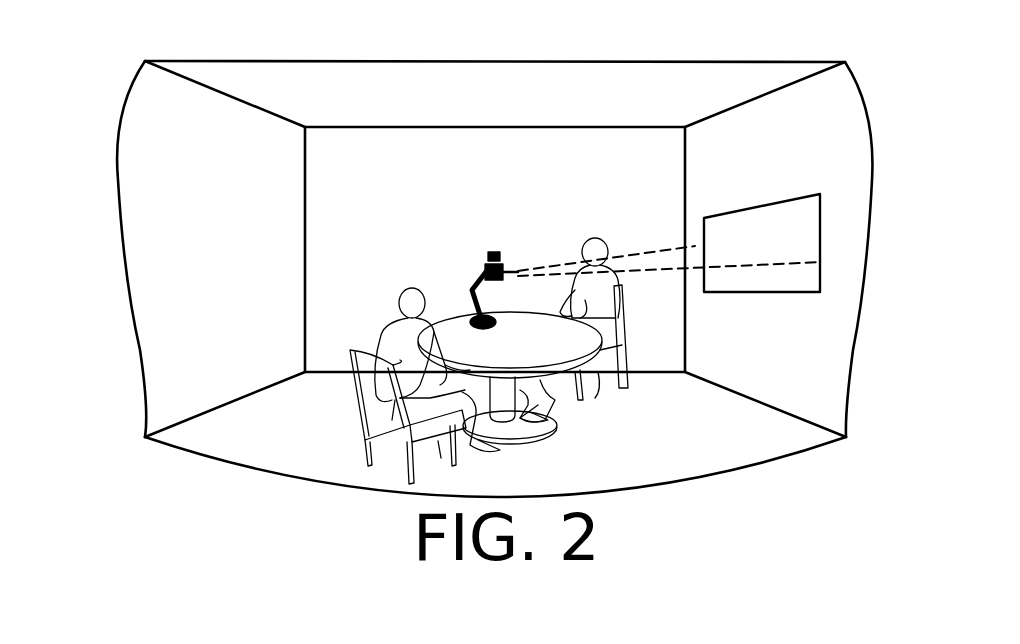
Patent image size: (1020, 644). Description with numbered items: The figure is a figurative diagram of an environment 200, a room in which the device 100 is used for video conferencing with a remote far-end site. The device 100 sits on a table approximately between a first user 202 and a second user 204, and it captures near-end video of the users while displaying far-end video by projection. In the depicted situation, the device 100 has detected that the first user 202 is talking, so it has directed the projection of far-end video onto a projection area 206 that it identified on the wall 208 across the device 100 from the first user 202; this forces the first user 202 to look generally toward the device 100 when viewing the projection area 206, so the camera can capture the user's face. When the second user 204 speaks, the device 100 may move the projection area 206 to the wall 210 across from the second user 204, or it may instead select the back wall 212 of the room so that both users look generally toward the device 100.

The environment 200 is at (168, 38).
The device 100 is at (480, 276).
The first user 202 is at (405, 295).
The second user 204 is at (601, 243).
The projection area 206 is at (777, 217).
The wall 208 is at (706, 162).
The wall 210 is at (288, 166).
The back wall 212 is at (458, 148).